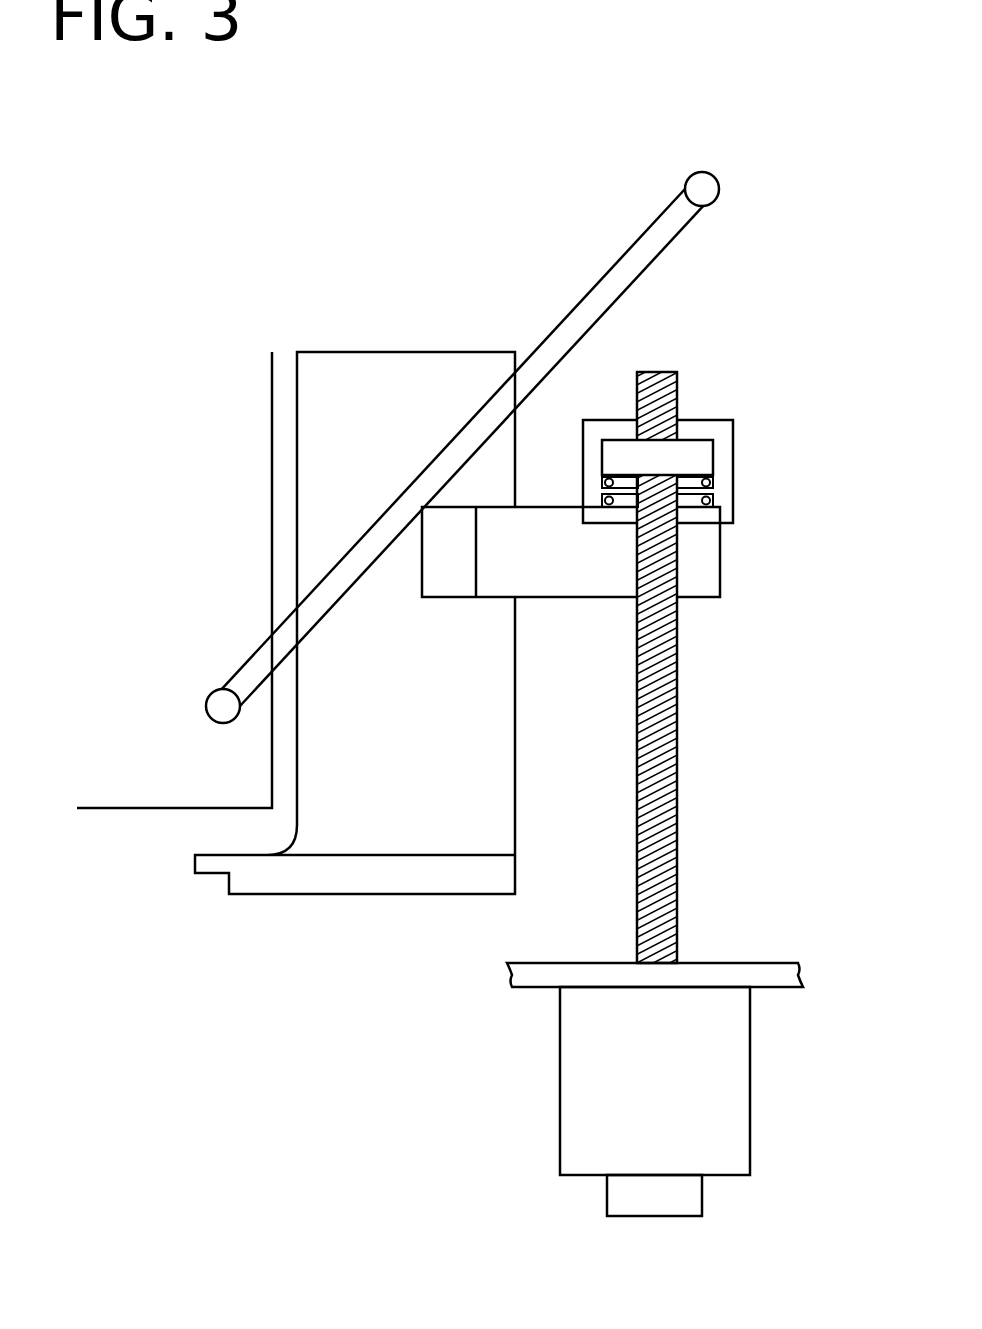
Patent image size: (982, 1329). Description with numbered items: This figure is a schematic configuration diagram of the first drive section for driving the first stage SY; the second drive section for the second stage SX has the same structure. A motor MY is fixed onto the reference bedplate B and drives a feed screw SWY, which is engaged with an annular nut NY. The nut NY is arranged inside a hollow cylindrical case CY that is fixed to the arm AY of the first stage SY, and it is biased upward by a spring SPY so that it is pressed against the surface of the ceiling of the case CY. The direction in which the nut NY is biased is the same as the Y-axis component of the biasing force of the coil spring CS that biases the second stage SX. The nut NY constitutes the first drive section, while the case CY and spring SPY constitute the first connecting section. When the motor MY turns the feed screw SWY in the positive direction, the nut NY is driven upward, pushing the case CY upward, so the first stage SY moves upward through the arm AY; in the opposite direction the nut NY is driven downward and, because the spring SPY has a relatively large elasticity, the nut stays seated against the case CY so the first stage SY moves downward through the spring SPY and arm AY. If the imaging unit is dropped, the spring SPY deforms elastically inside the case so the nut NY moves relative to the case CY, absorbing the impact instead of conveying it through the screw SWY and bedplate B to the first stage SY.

The second stage SX is at (110, 810).
The first stage SY is at (350, 895).
The coil spring CS is at (655, 258).
The nut NY is at (693, 455).
The case CY is at (733, 445).
The spring SPY is at (707, 485).
The arm AY is at (720, 568).
The feed screw SWY is at (677, 763).
The reference bedplate B is at (802, 972).
The motor MY is at (750, 1077).